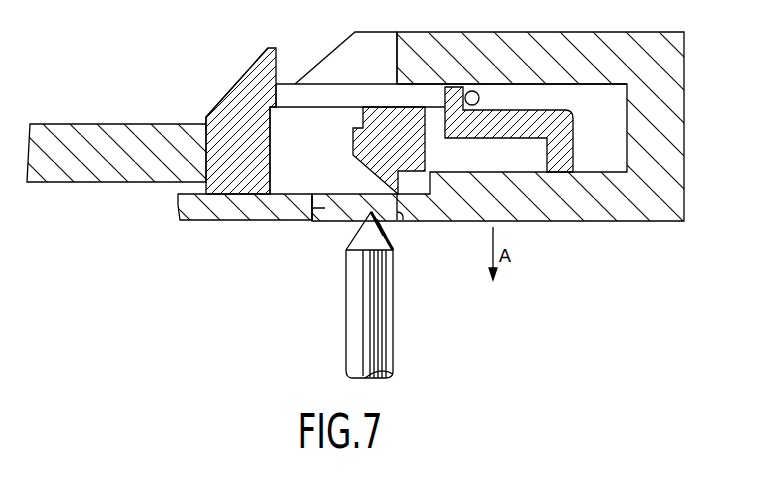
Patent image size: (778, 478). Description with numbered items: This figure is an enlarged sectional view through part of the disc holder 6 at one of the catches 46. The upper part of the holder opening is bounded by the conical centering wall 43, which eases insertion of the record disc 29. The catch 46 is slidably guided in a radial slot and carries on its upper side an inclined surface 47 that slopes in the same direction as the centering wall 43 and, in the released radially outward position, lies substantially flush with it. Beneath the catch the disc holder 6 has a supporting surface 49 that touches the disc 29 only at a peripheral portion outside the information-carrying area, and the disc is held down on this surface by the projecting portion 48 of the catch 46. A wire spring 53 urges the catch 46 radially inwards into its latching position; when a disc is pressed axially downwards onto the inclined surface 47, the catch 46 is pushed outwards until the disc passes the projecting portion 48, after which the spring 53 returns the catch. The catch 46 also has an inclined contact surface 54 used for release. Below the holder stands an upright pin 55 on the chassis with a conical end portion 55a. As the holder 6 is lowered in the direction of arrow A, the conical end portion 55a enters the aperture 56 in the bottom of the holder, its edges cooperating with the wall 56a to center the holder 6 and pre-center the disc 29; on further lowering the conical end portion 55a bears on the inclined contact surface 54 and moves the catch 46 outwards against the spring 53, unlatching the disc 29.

The disc holder 6 is at (599, 212).
The record disc 29 is at (92, 146).
The centering wall 43 is at (318, 60).
The catch 46 is at (224, 91).
The inclined surface 47 is at (251, 62).
The projecting portion 48 is at (200, 116).
The supporting surface 49 is at (192, 190).
The wire spring 53 is at (481, 98).
The inclined contact surface 54 is at (353, 160).
The pin 55 is at (345, 295).
The conical end portion 55a is at (366, 230).
The aperture 56 is at (312, 221).
The wall 56a is at (398, 213).